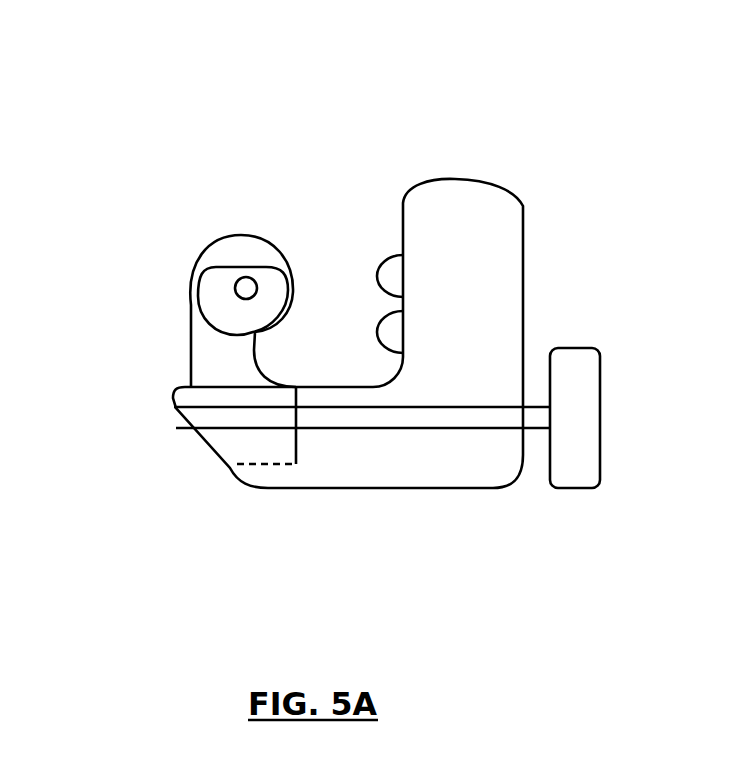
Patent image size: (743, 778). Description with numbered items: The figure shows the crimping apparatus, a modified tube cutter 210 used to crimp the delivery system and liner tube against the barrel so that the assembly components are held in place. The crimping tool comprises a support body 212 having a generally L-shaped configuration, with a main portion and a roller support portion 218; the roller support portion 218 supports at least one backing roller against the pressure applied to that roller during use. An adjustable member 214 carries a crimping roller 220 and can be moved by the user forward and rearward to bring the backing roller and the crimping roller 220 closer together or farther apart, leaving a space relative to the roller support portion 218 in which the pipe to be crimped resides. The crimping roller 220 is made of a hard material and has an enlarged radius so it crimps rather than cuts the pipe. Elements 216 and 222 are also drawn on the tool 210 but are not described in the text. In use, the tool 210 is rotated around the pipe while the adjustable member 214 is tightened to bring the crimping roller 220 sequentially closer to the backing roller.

The modified tube cutter 210 is at (158, 125).
The support body 212 is at (336, 464).
The adjustable member 214 is at (452, 205).
The clamp arm / head 216 is at (215, 360).
The roller support portion 218 is at (575, 383).
The crimping roller 220 is at (397, 277).
The pivot portion 222 is at (260, 315).